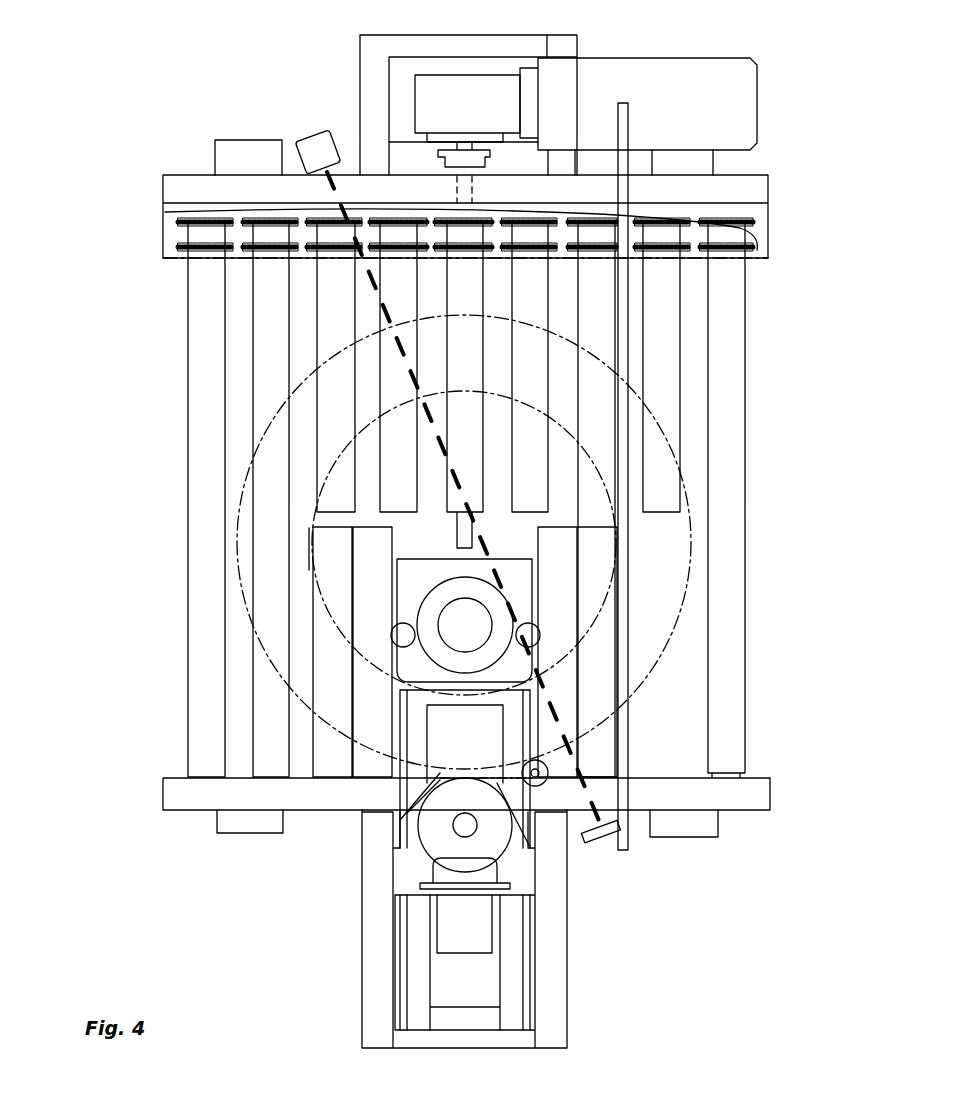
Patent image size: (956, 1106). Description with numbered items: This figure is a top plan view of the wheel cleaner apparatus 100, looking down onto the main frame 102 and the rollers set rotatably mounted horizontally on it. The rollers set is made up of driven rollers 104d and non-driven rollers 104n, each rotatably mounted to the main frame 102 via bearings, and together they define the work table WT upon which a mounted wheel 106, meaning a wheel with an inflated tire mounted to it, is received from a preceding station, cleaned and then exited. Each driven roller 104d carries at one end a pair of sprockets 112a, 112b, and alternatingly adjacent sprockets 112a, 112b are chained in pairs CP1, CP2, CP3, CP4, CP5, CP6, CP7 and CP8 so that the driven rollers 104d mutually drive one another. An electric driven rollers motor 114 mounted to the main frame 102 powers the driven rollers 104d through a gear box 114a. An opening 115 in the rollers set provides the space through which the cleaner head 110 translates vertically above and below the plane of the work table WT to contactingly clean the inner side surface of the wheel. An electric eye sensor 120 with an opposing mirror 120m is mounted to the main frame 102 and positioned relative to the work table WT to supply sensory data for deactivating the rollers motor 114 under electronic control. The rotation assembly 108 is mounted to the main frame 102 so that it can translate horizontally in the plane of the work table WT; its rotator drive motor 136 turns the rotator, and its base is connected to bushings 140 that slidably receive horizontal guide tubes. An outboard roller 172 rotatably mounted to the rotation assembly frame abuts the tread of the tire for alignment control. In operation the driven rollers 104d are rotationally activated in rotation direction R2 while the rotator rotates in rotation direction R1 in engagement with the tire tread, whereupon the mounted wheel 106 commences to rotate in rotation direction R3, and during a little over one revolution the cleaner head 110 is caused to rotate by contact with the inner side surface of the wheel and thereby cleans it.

The wheel cleaner apparatus 100 is at (802, 90).
The main frame 102 is at (313, 814).
The driven rollers 104d is at (202, 392).
The non-driven rollers 104n is at (325, 668).
The mounted wheel 106 is at (664, 430).
The rotation assembly 108 is at (330, 905).
The cleaner head 110 is at (484, 602).
The sprocket 112a is at (164, 222).
The sprocket 112b is at (164, 247).
The driven rollers motor 114 is at (660, 58).
The gear box 114a is at (493, 73).
The opening 115 is at (440, 530).
The electric eye sensor 120 is at (312, 145).
The mirror 120m is at (590, 843).
The rotator drive motor 136 is at (493, 923).
The bushings 140 is at (405, 972).
The outboard roller 172 is at (522, 762).
The chained pair CP1 is at (237, 220).
The chained pair CP2 is at (303, 250).
The chained pair CP3 is at (370, 222).
The chained pair CP4 is at (432, 245).
The chained pair CP5 is at (500, 222).
The chained pair CP6 is at (563, 247).
The chained pair CP7 is at (633, 222).
The chained pair CP8 is at (697, 245).
The rotation direction R1 is at (438, 776).
The rotation direction R2 is at (268, 380).
The rotation direction R3 is at (240, 690).
The work table WT is at (732, 537).